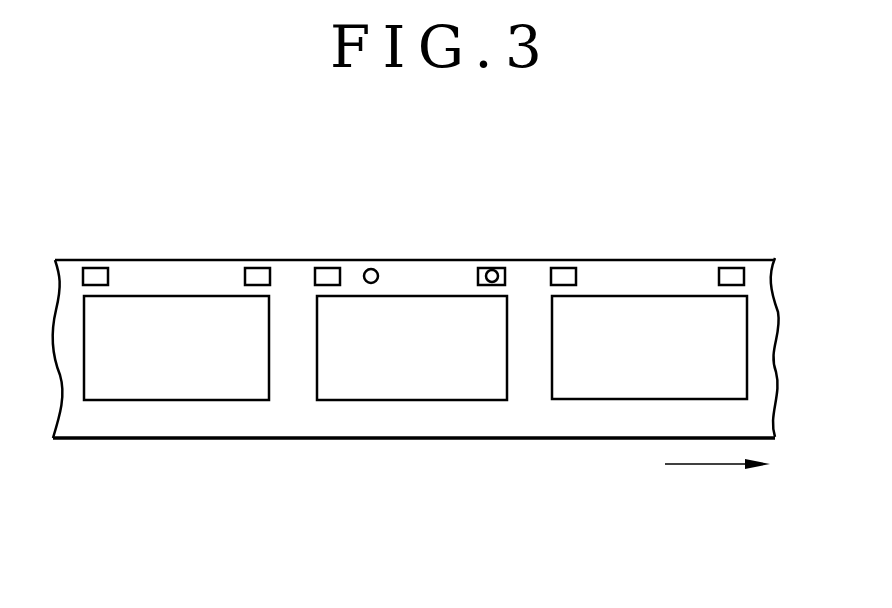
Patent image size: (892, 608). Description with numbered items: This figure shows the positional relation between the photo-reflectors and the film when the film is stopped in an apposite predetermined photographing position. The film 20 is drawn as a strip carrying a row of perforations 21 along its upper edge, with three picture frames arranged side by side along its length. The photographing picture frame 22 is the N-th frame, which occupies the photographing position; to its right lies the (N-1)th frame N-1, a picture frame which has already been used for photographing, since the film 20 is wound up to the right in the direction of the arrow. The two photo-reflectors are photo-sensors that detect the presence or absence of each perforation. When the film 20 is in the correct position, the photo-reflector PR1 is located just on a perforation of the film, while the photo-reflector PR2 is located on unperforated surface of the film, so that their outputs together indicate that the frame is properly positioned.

The film 20 is at (203, 275).
The perforations 21 is at (99, 272).
The photographing picture frame 22 is at (430, 296).
The photo-reflector PR1 is at (492, 270).
The photo-reflector PR2 is at (371, 269).
The N-th frame N is at (392, 371).
The (N-1)th frame N-1 is at (600, 372).